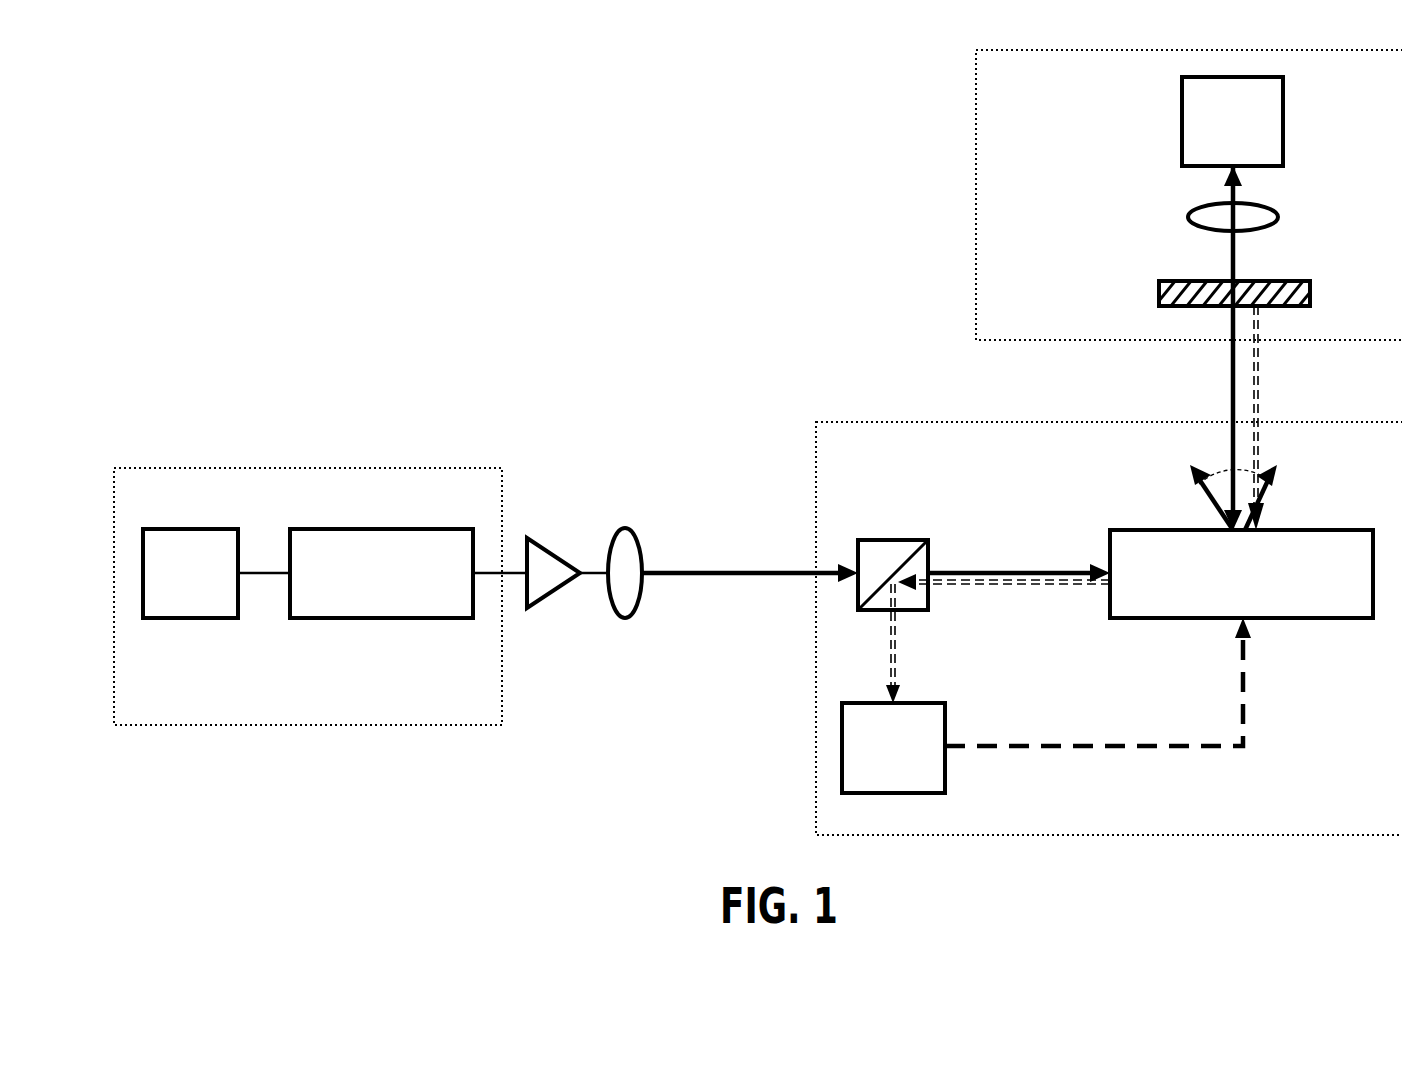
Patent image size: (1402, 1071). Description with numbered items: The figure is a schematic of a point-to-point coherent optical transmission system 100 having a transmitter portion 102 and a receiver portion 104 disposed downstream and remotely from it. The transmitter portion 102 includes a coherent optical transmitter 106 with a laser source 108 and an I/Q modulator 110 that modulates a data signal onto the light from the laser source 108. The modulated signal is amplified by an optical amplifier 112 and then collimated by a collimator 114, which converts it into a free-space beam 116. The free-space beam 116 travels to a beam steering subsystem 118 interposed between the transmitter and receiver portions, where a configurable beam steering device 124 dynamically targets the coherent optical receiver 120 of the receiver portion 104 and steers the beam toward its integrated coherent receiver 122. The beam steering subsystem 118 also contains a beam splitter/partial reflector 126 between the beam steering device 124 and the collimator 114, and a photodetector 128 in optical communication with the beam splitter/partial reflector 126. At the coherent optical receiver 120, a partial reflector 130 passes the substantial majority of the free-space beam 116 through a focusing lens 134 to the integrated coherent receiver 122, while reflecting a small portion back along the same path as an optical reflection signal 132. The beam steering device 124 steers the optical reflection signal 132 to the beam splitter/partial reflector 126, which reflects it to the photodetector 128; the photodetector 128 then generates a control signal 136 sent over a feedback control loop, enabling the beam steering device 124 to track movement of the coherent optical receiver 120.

The point-to-point coherent optical transmission system 100 is at (360, 117).
The transmitter portion 102 is at (311, 428).
The receiver portion 104 is at (924, 110).
The coherent optical transmitter 106 is at (328, 704).
The laser source 108 is at (208, 601).
The modulator 110 is at (400, 601).
The optical amplifier 112 is at (553, 552).
The collimator 114 is at (625, 618).
The free-space beam 116 is at (750, 568).
The beam steering subsystem 118 is at (843, 420).
The coherent optical receiver 120 is at (1068, 138).
The integrated coherent receiver 122 is at (1250, 154).
The configurable beam steering device 124 is at (1260, 601).
The beam splitter/partial reflector 126 is at (893, 540).
The photodetector 128 is at (911, 777).
The partial reflector 130 is at (1310, 291).
The optical reflection signal 132 is at (1260, 405).
The focusing lens 134 is at (1278, 218).
The control signal 136 is at (1243, 717).